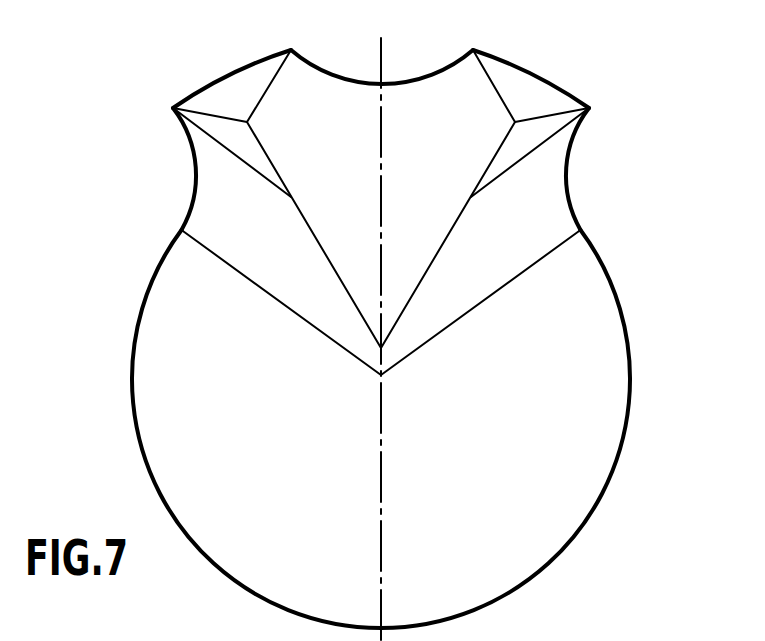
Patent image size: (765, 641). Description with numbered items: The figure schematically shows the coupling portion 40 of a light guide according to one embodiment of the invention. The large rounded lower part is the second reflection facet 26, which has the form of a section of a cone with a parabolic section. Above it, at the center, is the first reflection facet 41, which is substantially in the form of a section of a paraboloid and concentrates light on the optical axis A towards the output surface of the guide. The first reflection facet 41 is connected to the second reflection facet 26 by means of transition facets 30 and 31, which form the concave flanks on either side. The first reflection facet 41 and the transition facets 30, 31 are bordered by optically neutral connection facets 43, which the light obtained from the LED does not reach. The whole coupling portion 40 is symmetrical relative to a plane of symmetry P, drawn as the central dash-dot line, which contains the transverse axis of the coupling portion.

The second reflection facet 26 is at (597, 430).
The transition facet 30 is at (542, 208).
The transition facet 31 is at (227, 187).
The coupling portion 40 is at (640, 334).
The first reflection facet 41 is at (310, 107).
The optically neutral connection facet 43 is at (223, 98).
The optical axis A is at (382, 53).
The plane of symmetry P is at (380, 425).